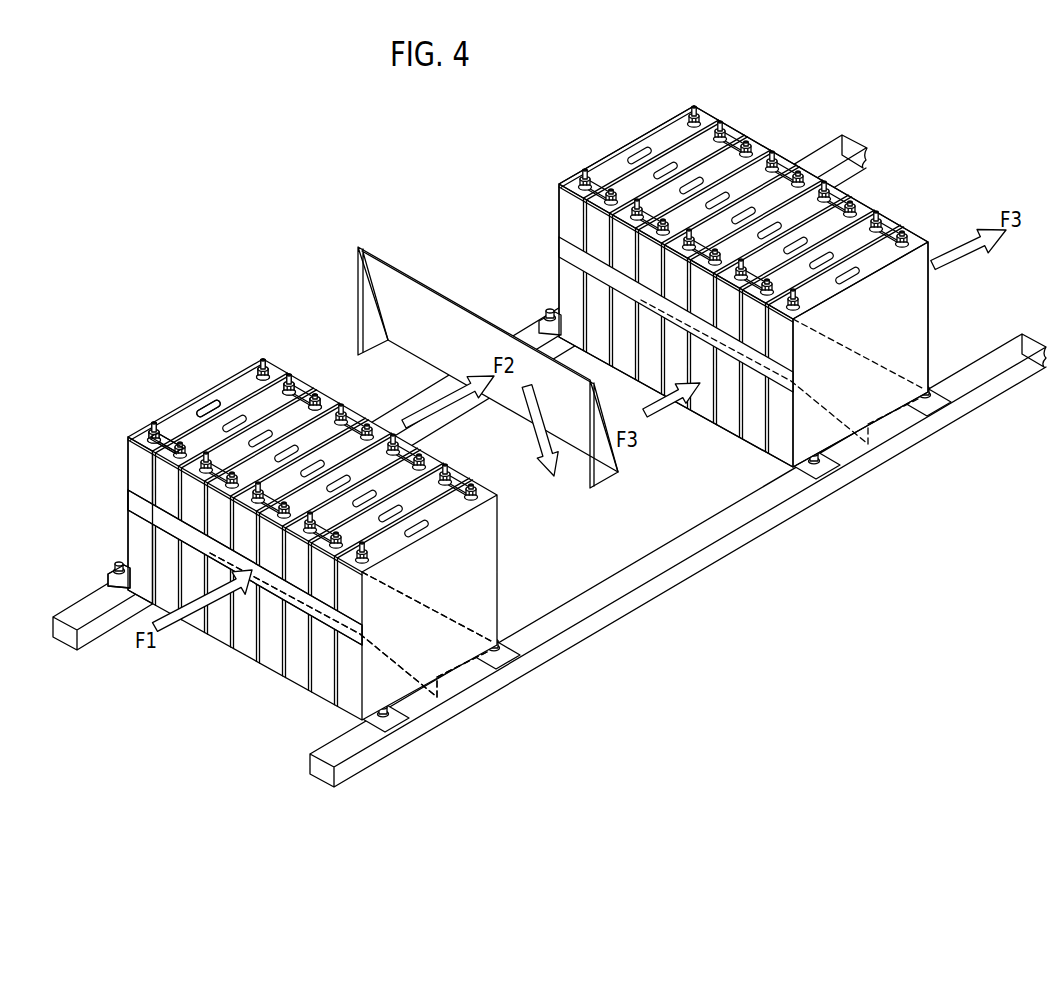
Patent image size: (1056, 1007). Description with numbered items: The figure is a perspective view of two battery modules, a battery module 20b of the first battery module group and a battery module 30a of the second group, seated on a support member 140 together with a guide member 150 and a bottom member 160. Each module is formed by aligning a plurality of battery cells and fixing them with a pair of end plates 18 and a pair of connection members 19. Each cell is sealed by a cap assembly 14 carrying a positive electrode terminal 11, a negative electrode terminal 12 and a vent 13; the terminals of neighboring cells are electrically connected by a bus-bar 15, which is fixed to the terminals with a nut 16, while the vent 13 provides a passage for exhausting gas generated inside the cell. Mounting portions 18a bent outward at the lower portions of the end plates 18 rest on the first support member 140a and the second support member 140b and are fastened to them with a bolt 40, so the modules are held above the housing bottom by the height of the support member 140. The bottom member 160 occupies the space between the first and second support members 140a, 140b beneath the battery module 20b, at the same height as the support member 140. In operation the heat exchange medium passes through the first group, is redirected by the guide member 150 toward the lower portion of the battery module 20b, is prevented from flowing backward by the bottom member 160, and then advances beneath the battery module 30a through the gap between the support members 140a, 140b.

The positive electrode terminal 11 is at (263, 357).
The negative electrode terminal 12 is at (152, 422).
The vent 13 is at (212, 404).
The cap assembly 14 is at (182, 420).
The bus-bar 15 is at (309, 394).
The nut 16 is at (285, 380).
The end plate 18 is at (126, 489).
The mounting portion 18a is at (504, 656).
The connection member 19 is at (134, 514).
The battery module 20b is at (326, 519).
The battery module 30a is at (600, 95).
The bolt 40 is at (504, 650).
The support member 140 is at (549, 479).
The first support member 140a is at (310, 770).
The second support member 140b is at (66, 637).
The guide member 150 is at (407, 273).
The bottom member 160 is at (470, 625).